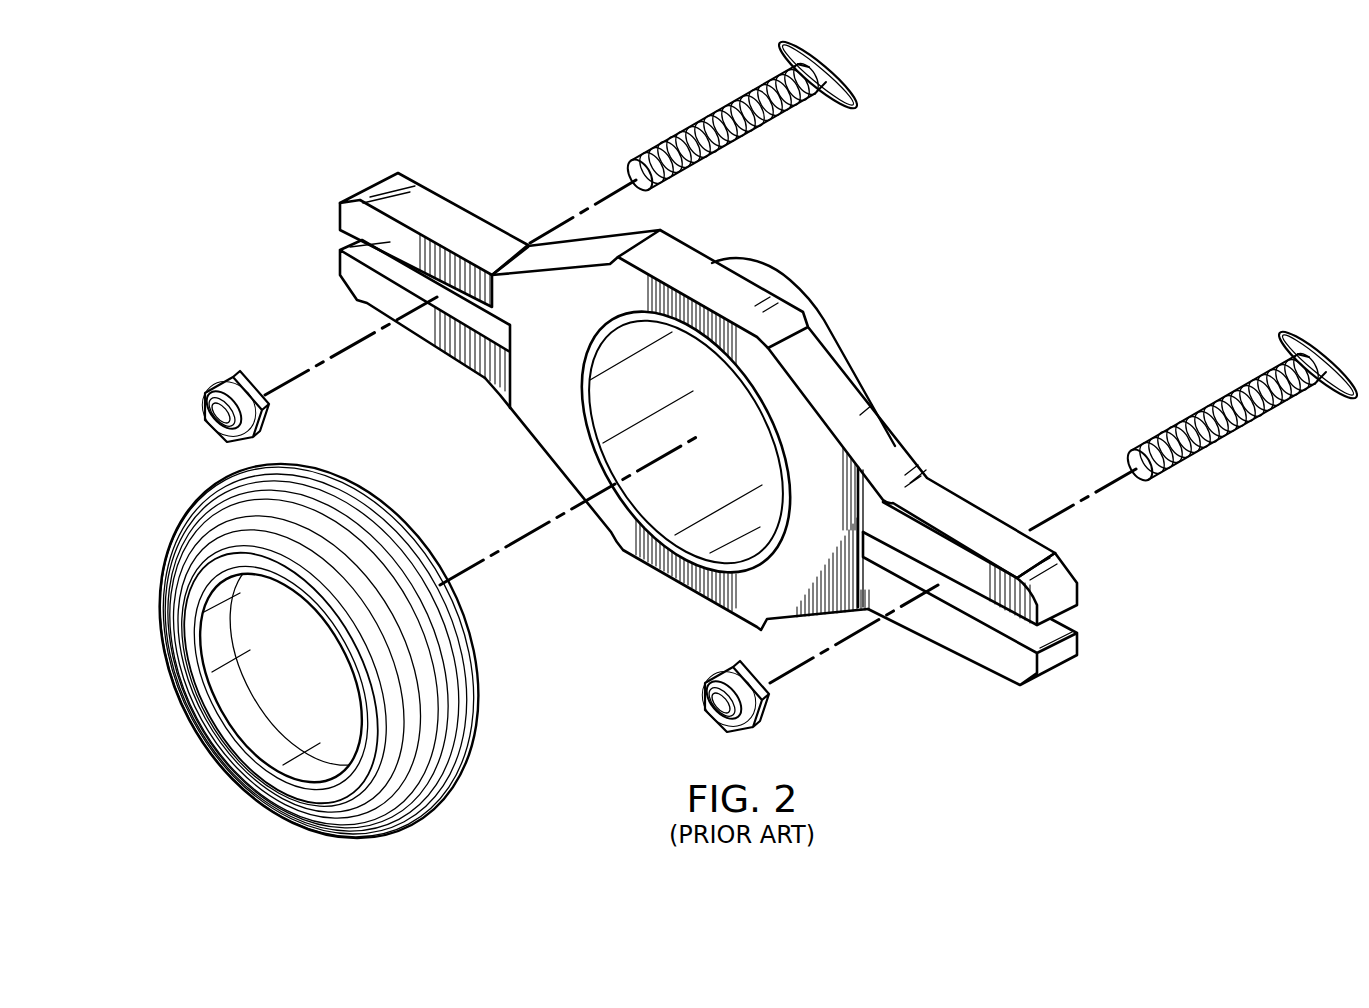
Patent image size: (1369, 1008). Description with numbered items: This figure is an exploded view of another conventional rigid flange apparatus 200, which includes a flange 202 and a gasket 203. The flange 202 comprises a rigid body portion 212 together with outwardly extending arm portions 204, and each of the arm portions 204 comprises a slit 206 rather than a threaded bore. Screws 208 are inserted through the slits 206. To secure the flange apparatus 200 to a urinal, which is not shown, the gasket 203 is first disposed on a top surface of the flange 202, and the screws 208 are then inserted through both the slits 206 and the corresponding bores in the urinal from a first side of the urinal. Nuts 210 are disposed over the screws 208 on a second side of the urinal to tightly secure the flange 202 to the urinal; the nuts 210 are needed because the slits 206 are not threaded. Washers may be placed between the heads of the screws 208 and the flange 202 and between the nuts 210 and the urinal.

The rigid flange apparatus 200 is at (1097, 125).
The flange 202 is at (888, 443).
The gasket 203 is at (193, 730).
The arm portions 204 is at (1060, 573).
The slit 206 is at (1007, 626).
The screws 208 is at (700, 123).
The nuts 210 is at (222, 385).
The rigid body portion 212 is at (770, 265).